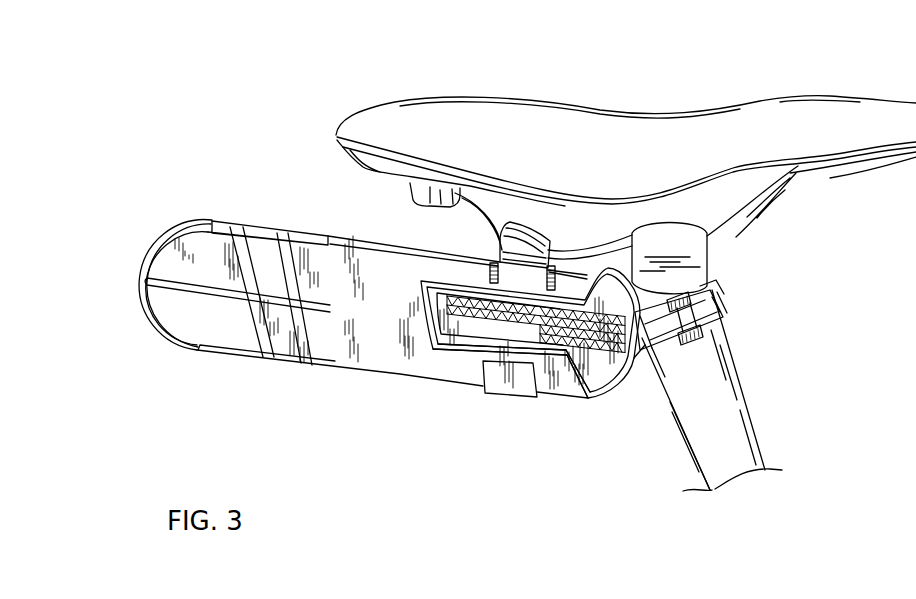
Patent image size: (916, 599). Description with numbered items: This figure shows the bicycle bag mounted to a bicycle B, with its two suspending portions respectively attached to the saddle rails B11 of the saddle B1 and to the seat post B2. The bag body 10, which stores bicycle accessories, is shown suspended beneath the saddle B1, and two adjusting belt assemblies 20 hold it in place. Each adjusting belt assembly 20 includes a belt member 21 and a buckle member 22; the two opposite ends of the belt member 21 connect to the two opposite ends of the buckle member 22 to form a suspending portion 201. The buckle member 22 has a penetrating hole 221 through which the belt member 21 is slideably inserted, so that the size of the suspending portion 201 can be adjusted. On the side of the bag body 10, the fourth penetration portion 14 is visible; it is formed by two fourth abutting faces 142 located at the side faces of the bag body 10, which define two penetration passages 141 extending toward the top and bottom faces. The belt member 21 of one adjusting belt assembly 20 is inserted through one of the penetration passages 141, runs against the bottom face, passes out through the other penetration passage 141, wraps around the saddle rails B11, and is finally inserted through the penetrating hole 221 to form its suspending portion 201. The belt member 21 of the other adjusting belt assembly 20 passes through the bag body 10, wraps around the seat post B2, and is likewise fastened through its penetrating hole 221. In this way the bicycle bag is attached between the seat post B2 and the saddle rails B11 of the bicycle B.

The bag body 10 is at (390, 396).
The fourth penetration portion 14 is at (432, 353).
The penetration passages 141 is at (482, 364).
The fourth abutting faces 142 is at (528, 340).
The adjusting belt assembly 20 is at (503, 407).
The suspending portion 201 is at (485, 239).
The belt member 21 is at (646, 345).
The buckle member 22 is at (702, 339).
The penetrating hole 221 is at (692, 328).
The bicycle B is at (813, 292).
The saddle B1 is at (662, 130).
The saddle rails B11 is at (746, 207).
The seat post B2 is at (745, 436).